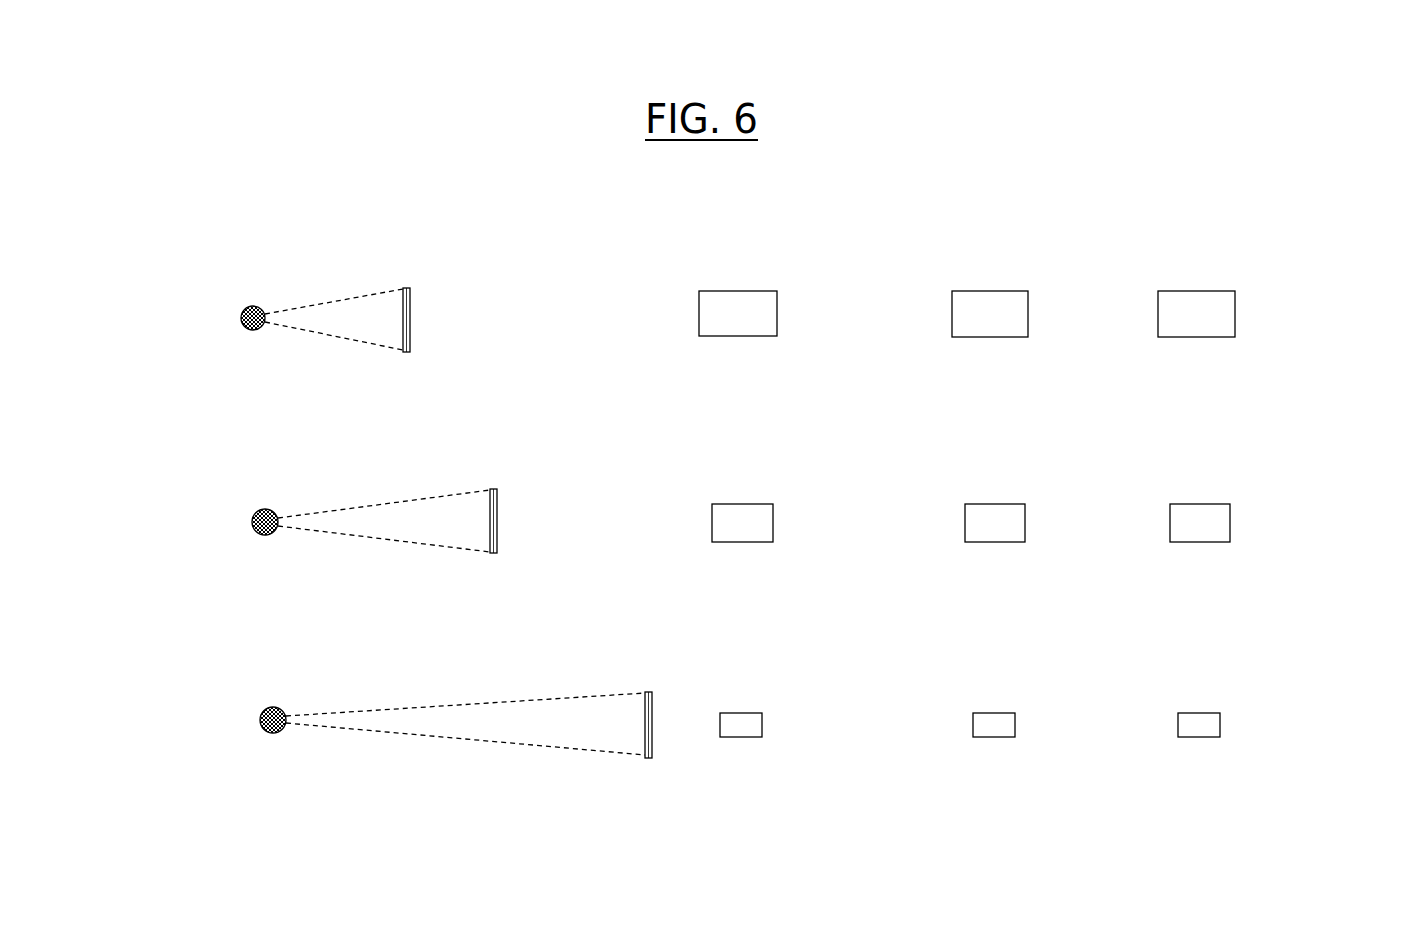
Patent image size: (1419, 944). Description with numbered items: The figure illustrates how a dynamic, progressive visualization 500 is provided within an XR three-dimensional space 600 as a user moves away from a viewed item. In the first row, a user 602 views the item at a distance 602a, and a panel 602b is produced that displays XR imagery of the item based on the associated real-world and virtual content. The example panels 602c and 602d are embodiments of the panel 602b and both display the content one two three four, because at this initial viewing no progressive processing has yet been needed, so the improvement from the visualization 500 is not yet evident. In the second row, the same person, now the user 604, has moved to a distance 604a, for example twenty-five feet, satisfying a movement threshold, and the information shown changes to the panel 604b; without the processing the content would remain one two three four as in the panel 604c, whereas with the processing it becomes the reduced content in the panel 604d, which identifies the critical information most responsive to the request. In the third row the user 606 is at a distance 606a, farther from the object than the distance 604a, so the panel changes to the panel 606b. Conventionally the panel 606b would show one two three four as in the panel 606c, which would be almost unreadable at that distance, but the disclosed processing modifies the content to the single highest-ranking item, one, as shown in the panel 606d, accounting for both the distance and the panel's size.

The XR three-dimensional space 600 is at (632, 216).
The dynamic progressive visualization process 500 is at (1400, 223).
The user 602 is at (142, 326).
The distance 602a is at (347, 353).
The panel 602b is at (729, 344).
The panel 602c is at (983, 343).
The panel 602d is at (1190, 343).
The user 604 is at (183, 532).
The distance 604a is at (356, 549).
The panel 604b is at (739, 549).
The panel 604c is at (1002, 549).
The panel 604d is at (1199, 549).
The user 606 is at (179, 731).
The distance 606a is at (430, 746).
The panel 606b is at (739, 755).
The panel 606c is at (993, 747).
The panel 606d is at (1198, 748).